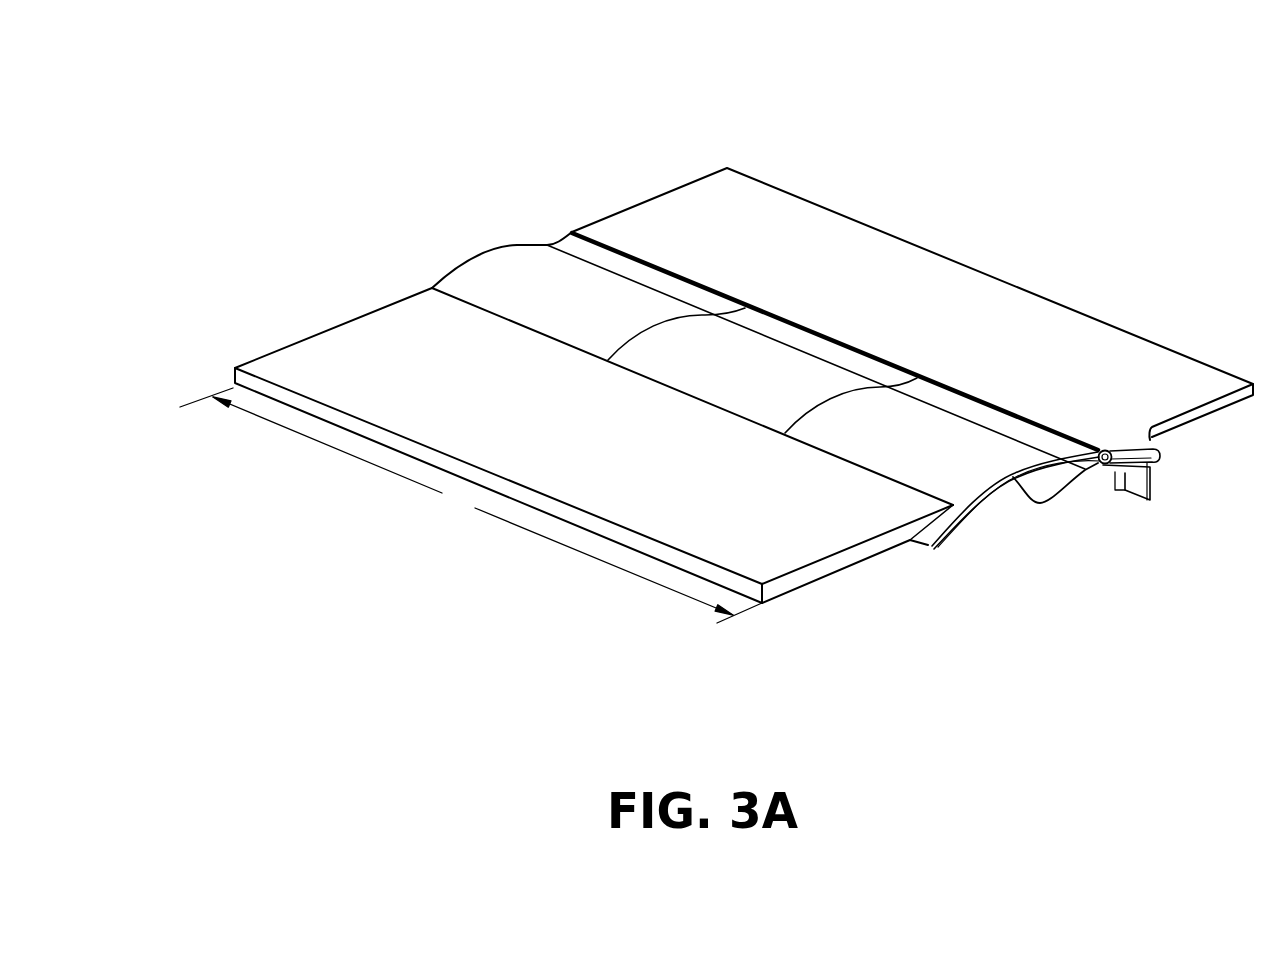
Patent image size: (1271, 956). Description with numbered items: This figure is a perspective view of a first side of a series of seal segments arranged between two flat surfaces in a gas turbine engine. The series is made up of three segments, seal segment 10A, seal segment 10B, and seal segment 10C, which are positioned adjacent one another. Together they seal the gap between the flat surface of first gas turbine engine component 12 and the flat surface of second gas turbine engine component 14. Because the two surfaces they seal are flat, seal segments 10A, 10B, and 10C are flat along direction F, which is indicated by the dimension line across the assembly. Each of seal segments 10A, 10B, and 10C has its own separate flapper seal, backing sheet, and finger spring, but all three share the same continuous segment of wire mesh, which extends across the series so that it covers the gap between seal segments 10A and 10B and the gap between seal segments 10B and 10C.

The seal segment 10A is at (498, 293).
The seal segment 10B is at (717, 357).
The seal segment 10C is at (927, 437).
The first gas turbine engine component 12 is at (1123, 363).
The second gas turbine engine component 14 is at (327, 362).